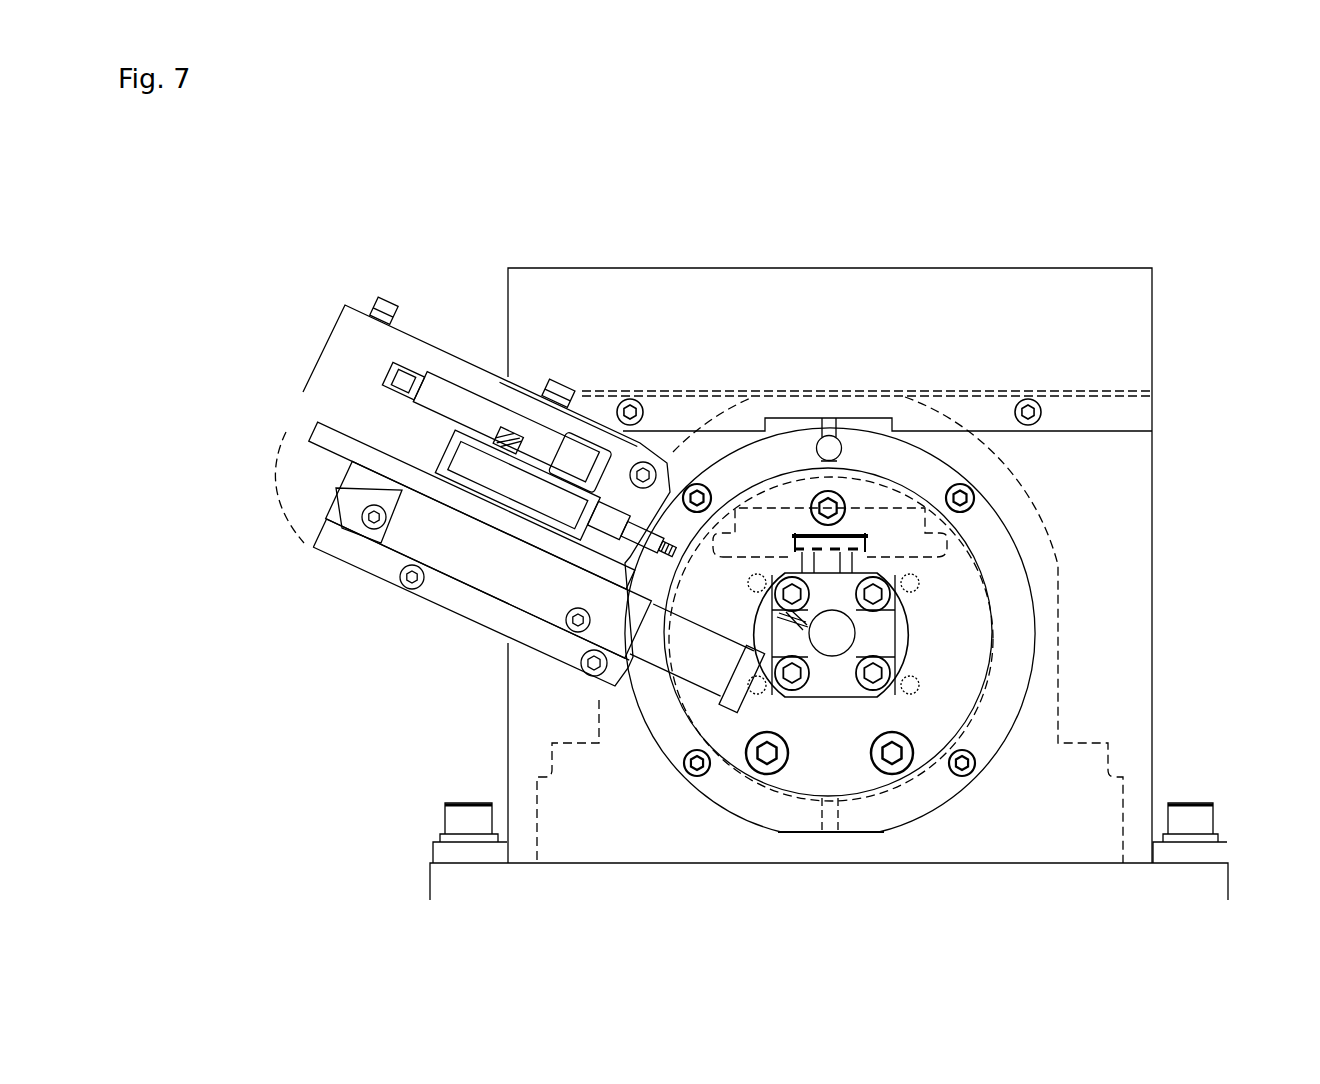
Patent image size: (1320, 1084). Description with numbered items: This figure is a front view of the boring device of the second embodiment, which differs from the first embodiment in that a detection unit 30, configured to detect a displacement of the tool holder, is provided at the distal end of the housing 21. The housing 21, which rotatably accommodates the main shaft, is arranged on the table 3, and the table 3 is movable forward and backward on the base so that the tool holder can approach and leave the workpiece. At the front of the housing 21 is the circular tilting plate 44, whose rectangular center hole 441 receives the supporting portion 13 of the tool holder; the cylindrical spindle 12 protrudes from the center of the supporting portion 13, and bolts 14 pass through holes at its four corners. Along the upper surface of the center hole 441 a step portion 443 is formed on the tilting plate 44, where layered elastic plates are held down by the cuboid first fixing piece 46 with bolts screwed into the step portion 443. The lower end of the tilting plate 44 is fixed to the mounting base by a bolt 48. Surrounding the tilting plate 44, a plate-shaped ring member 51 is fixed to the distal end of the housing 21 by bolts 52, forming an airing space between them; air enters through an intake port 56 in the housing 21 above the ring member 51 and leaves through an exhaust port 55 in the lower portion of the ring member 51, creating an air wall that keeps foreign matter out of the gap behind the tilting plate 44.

The detection unit 30 is at (466, 300).
The step portion 443 is at (782, 555).
The intake port 56 is at (829, 436).
The first fixing piece 46 is at (873, 543).
The tilting plate 44 is at (960, 583).
The housing 21 is at (1128, 585).
The supporting portion 13 is at (877, 633).
The spindle 12 is at (848, 635).
The bolts 14 is at (873, 673).
The table 3 is at (1205, 890).
The bolts 52 is at (697, 765).
The bolt 48 is at (767, 762).
The ring member 51 is at (890, 813).
The exhaust port 55 is at (832, 820).
The center hole 441 is at (850, 693).